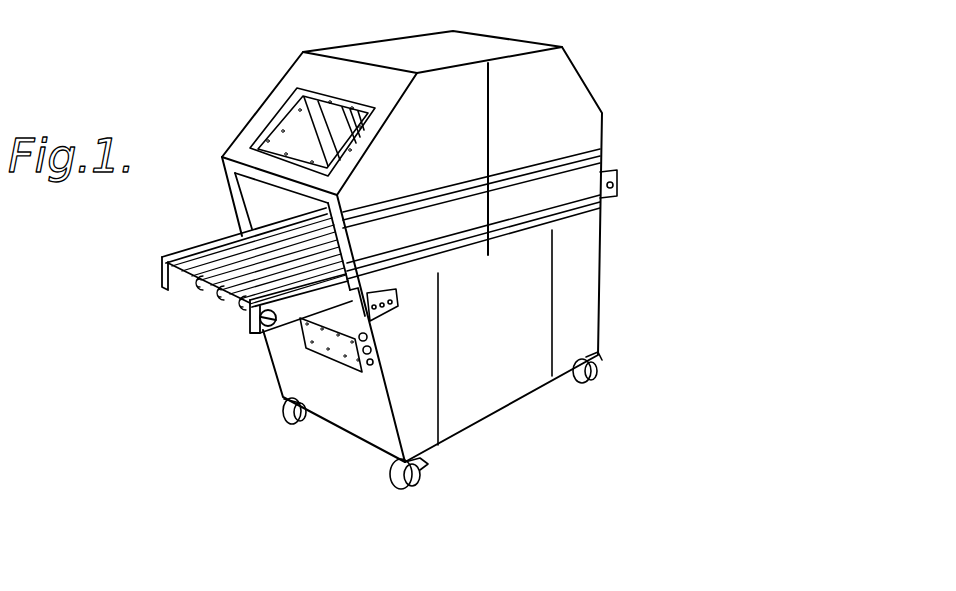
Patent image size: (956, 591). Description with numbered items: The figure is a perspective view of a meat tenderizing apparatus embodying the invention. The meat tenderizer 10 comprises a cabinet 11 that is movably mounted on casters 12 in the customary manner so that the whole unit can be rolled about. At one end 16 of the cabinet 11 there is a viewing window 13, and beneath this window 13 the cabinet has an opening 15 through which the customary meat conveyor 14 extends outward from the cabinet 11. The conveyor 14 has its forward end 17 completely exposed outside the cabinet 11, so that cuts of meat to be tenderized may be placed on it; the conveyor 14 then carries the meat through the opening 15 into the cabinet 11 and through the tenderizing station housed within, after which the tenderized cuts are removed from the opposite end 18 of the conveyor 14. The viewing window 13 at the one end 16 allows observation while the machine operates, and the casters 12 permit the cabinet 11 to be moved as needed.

The meat tenderizer 10 is at (595, 74).
The cabinet 11 is at (513, 320).
The casters 12 is at (295, 421).
The viewing window 13 is at (302, 117).
The meat conveyor 14 is at (190, 302).
The opening 15 is at (245, 194).
The one end 16 is at (288, 360).
The forward end 17 is at (240, 266).
The opposite end 18 is at (606, 175).